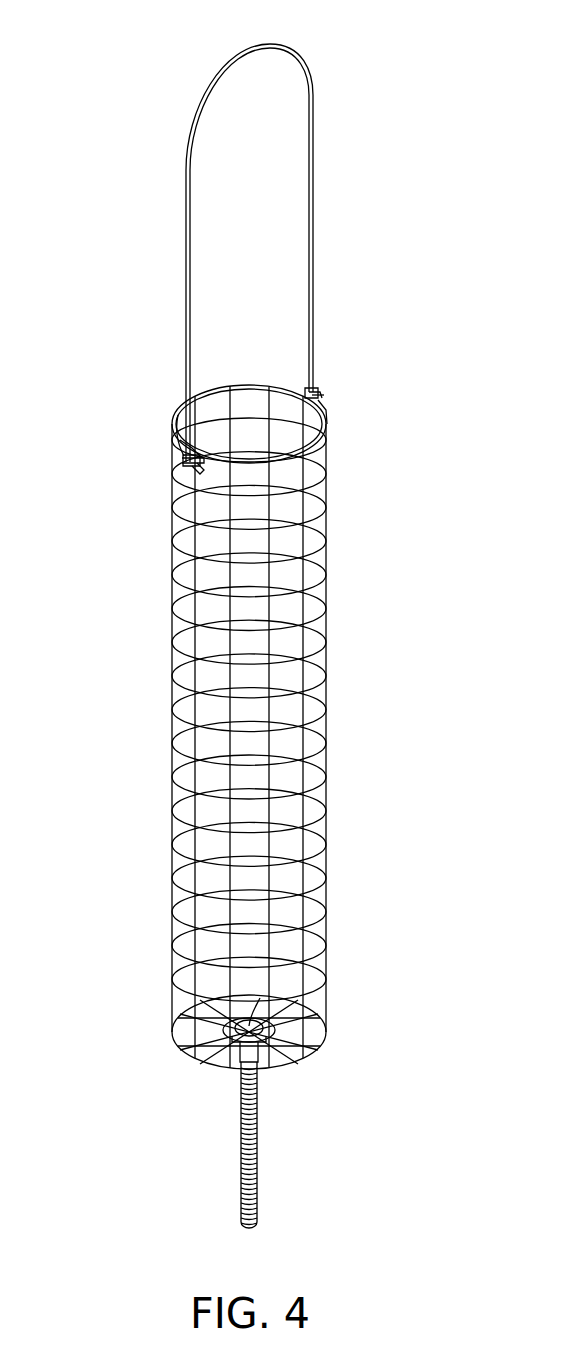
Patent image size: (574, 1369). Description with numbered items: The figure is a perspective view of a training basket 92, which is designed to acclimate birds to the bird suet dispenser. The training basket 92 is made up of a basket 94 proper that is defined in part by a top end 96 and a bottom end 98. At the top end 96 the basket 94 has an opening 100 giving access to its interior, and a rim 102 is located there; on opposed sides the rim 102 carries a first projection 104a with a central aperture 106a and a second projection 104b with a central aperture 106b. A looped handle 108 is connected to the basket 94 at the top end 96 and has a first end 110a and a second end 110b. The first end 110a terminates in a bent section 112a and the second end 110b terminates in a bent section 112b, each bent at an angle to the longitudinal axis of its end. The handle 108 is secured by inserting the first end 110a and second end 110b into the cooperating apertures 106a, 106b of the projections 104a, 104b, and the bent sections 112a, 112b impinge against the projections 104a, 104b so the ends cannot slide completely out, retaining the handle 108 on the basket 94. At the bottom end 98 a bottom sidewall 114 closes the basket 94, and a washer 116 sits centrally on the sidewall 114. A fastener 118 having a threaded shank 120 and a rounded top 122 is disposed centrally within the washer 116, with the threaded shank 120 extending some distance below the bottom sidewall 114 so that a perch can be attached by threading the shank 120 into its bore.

The looped handle 108 is at (228, 72).
The opening 100 is at (213, 393).
The rim 102 is at (178, 400).
The first end 110a is at (182, 425).
The central aperture 106a is at (182, 447).
The first projection 104a is at (182, 462).
The bent section 112a is at (184, 480).
The second end 110b is at (307, 390).
The central aperture 106b is at (318, 392).
The second projection 104b is at (322, 395).
The bent section 112b is at (325, 420).
The top end 96 is at (328, 458).
The training basket 92 is at (327, 565).
The basket 94 is at (327, 722).
The rounded top 122 is at (327, 965).
The bottom end 98 is at (330, 1012).
The bottom sidewall 114 is at (325, 1050).
The washer 116 is at (178, 1048).
The fastener 118 is at (258, 1115).
The threaded shank 120 is at (258, 1185).